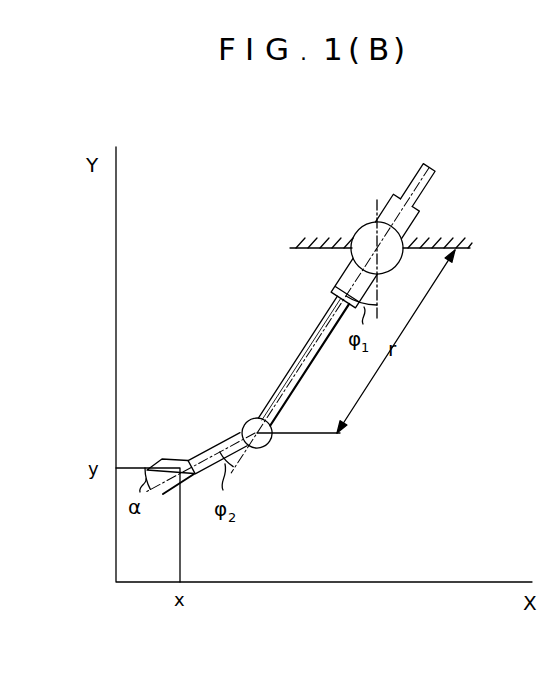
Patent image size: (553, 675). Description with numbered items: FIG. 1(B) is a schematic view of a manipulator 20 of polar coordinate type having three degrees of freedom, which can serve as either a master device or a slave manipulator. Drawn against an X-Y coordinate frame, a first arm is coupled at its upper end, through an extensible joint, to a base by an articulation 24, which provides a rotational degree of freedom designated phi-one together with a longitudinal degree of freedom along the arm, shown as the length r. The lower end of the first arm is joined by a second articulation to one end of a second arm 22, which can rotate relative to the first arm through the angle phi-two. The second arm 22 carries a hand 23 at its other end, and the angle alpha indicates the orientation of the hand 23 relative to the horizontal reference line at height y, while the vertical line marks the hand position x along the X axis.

The manipulator 20 is at (247, 296).
The second arm 22 is at (230, 438).
The hand 23 is at (173, 458).
The articulation 24 is at (330, 320).